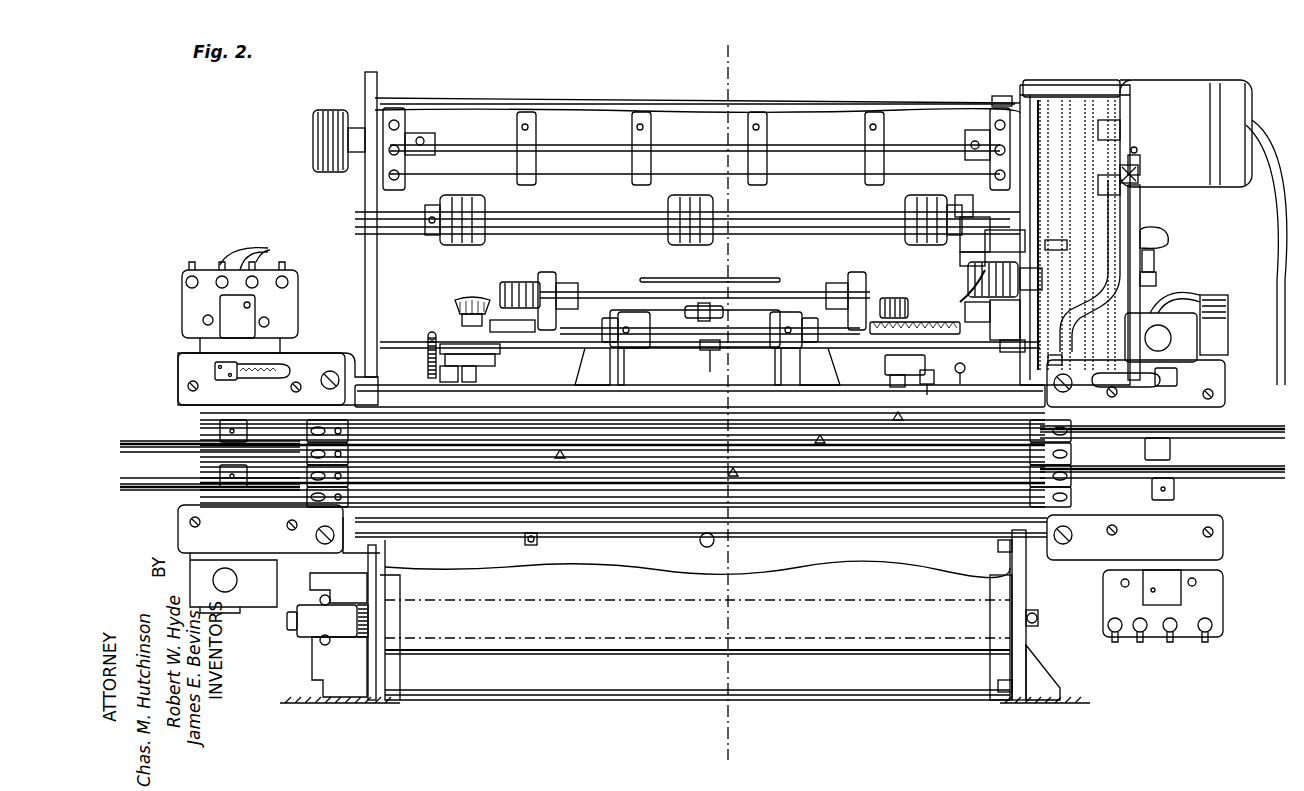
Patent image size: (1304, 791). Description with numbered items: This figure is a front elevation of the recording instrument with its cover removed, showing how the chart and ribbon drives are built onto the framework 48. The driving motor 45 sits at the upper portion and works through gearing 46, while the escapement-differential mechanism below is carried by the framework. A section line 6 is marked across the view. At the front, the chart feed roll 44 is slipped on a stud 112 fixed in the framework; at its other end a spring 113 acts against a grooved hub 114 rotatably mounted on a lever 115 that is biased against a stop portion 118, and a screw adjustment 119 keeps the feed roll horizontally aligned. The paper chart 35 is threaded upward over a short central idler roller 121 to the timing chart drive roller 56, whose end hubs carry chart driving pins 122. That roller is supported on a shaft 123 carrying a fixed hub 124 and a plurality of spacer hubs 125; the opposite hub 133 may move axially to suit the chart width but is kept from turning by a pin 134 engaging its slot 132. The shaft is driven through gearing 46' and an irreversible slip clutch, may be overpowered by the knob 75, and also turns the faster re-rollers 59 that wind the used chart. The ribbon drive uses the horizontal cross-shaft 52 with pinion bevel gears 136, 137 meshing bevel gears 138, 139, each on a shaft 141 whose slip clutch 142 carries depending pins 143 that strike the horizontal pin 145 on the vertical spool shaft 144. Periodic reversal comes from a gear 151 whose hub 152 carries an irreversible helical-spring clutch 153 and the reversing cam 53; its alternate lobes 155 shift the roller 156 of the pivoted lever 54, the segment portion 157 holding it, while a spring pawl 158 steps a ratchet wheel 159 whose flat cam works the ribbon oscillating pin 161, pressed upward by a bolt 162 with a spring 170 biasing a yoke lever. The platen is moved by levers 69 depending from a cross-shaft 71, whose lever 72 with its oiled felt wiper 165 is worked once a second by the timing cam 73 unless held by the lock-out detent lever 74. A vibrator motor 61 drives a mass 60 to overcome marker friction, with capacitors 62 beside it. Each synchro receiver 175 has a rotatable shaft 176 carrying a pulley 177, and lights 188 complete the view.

The section line 6- 6 is at (738, 62).
The paper chart 35 is at (553, 109).
The chart feed roll 44 is at (643, 640).
The driving motor 45 is at (1162, 90).
The gearing 46 is at (1071, 74).
The gearing 46' is at (1015, 215).
The framework 48 is at (1035, 665).
The horizontal cross-shaft 52 is at (670, 292).
The cam 53 is at (975, 218).
The pivoted lever 54 is at (1011, 344).
The timing chart drive roller 56 is at (606, 191).
The re-rollers 59 is at (486, 210).
The mass 60 is at (715, 306).
The vibrator motor 61 is at (712, 342).
The capacitors 62 is at (600, 262).
The levers 69 is at (625, 368).
The cross-shaft 71 is at (668, 310).
The lever 72 is at (1110, 302).
The timing cam 73 is at (1130, 168).
The lock-out detent lever 74 is at (1148, 235).
The knob 75 is at (313, 133).
The stud 112 is at (1028, 590).
The spring 113 is at (345, 650).
The grooved hub 114 is at (408, 660).
The lever 115 is at (297, 625).
The stop portion 118 is at (340, 588).
The screw adjustment 119 is at (322, 596).
The idler roller 121 is at (595, 538).
The chart driving pins 122 is at (393, 108).
The shaft 123 is at (800, 147).
The hub 124 is at (1000, 98).
The spacer hubs 125 is at (536, 130).
The slot 132 is at (424, 138).
The hub 133 is at (388, 106).
The pin 134 is at (436, 144).
The pinion bevel gear 136 is at (892, 298).
The pinion bevel gear 137 is at (500, 287).
The bevel gear 138 is at (912, 321).
The bevel gear 139 is at (455, 303).
The shaft 141 is at (512, 325).
The slip clutch 142 is at (495, 350).
The depending pins 143 is at (492, 364).
The vertical shaft 144 is at (500, 396).
The horizontal pin 145 is at (460, 383).
The gear 151 is at (982, 243).
The hub 152 is at (1020, 268).
The irreversible helical-spring clutch 153 is at (1044, 276).
The lobes 155 is at (957, 200).
The roller 156 is at (1010, 320).
The segment portion 157 is at (962, 282).
The spring pawl 158 is at (968, 319).
The ratchet wheel 159 is at (870, 328).
The ribbon oscillating pin 161 is at (962, 380).
The bolt 162 is at (936, 388).
The oiled felt wiper 165 is at (1138, 172).
The spring 170 is at (428, 358).
The synchro receiver 175 is at (190, 345).
The rotatable shaft 176 is at (1069, 238).
The pulley 177 is at (125, 446).
The lights 188 is at (268, 380).